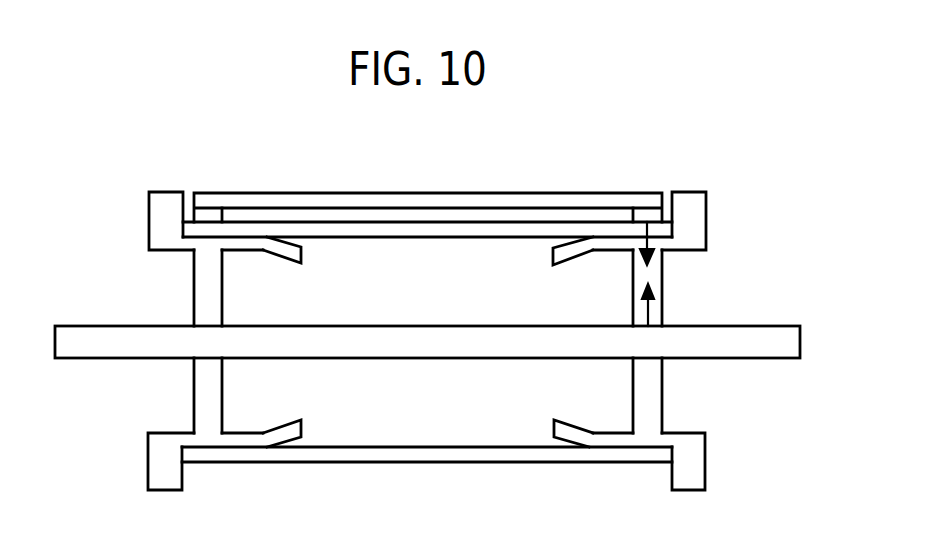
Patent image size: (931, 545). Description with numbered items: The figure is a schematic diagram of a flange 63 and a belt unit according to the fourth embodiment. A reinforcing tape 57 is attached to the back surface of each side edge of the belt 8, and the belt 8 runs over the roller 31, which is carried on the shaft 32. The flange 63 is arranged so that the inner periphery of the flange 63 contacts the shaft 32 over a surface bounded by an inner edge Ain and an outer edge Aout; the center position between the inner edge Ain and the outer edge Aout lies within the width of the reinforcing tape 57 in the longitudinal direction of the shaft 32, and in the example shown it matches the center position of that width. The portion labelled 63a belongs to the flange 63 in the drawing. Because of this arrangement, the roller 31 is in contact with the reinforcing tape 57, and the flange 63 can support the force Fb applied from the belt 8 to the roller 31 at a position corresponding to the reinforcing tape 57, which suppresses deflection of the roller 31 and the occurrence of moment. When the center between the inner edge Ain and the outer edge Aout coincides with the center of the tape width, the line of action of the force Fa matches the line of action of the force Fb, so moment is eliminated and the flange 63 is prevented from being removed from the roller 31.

The belt 8 is at (472, 193).
The roller 31 is at (389, 236).
The shaft 32 is at (795, 340).
The reinforcing tape 57 is at (205, 215).
The flange 63 is at (202, 290).
The lip portion of support column 63a is at (613, 248).
The force Fa is at (647, 312).
The force Fb is at (633, 250).
The inner edge Ain is at (633, 327).
The outer edge Aout is at (662, 327).